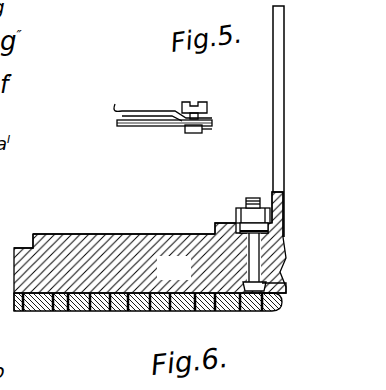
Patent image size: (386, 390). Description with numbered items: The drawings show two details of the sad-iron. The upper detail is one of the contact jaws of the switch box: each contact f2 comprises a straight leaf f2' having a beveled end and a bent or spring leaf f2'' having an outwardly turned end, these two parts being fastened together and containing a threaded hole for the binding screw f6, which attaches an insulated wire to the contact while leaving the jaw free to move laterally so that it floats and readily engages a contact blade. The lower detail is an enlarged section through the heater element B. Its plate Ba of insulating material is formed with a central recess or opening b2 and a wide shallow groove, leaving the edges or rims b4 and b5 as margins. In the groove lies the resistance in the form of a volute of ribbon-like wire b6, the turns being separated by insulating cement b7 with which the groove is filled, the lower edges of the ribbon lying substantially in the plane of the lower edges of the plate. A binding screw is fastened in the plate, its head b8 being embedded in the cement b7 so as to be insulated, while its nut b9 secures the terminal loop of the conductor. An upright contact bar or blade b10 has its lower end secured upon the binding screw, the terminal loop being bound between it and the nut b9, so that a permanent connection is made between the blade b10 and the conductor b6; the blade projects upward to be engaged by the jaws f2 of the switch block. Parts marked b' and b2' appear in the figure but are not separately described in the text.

In FIG. 5, the contact f2 is at (164, 97).
In FIG. 5, the bent or spring leaf f2'' is at (163, 88).
In FIG. 5, the straight leaf f2' is at (180, 140).
In FIG. 5, the binding screw f6 is at (201, 105).
In FIG. 6, the heater element B is at (139, 234).
In FIG. 6, the plate of insulating material Ba is at (88, 233).
In FIG. 6, the step of base b' is at (23, 222).
In FIG. 6, the central recess or opening b2 is at (217, 214).
In FIG. 6, the upright wall b2' is at (293, 219).
In FIG. 6, the edge or rim b4 is at (15, 311).
In FIG. 6, the edge or rim b5 is at (174, 268).
In FIG. 6, the ribbon-like wire b6 is at (53, 311).
In FIG. 6, the insulating cement b7 is at (112, 311).
In FIG. 6, the screw head b8 is at (276, 292).
In FIG. 6, the nut b9 is at (240, 203).
In FIG. 6, the contact blade b10 is at (284, 148).